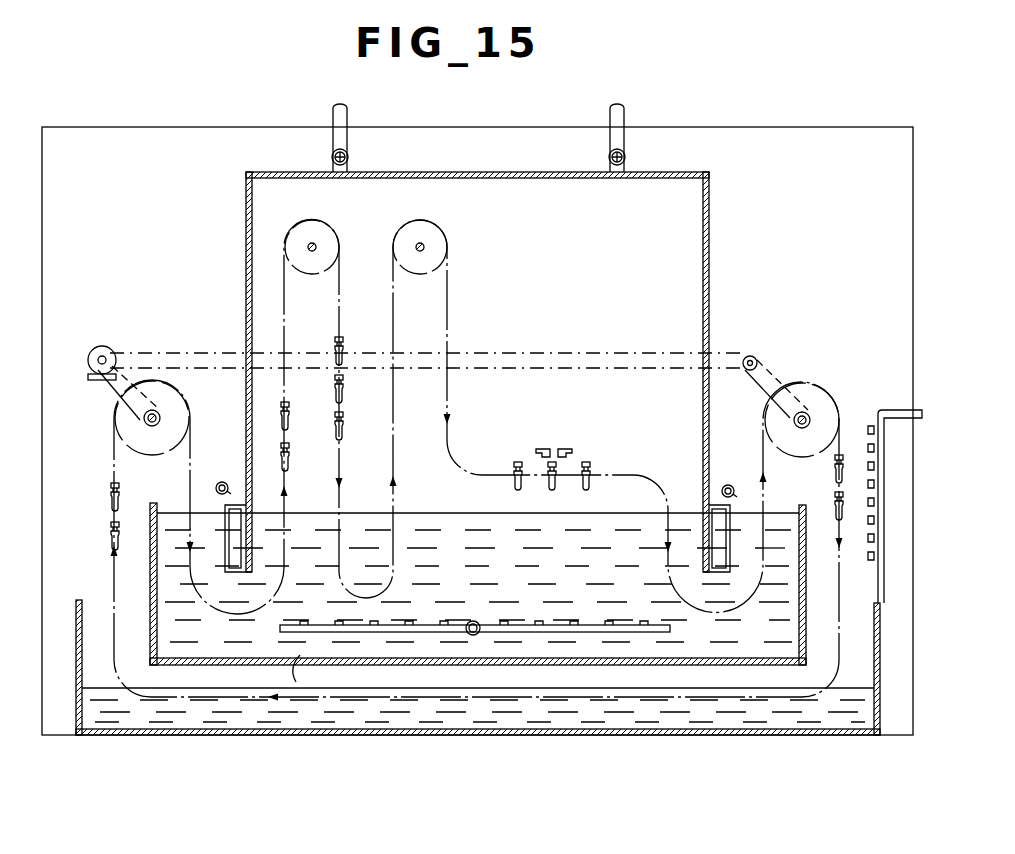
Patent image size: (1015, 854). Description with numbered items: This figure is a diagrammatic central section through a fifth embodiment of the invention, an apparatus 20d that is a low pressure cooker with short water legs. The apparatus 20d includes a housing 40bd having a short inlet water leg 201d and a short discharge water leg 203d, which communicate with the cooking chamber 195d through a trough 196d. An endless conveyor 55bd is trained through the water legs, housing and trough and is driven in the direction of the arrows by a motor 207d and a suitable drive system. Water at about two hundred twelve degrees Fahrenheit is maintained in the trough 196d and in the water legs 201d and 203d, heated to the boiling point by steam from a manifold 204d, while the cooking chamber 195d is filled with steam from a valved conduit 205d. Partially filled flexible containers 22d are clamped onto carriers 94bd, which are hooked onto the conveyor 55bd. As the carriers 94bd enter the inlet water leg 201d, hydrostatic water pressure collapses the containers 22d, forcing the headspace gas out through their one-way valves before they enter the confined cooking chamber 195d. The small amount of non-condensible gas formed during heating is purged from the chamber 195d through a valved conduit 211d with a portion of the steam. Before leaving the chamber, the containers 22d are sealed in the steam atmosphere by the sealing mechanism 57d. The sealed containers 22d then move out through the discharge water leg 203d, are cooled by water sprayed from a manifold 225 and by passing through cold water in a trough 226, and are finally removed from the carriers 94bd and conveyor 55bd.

The apparatus 20d is at (776, 82).
The valved conduit 211d is at (333, 114).
The valved conduit 205d is at (624, 114).
The housing 40bd is at (718, 184).
The cooking chamber 195d is at (572, 259).
The endless conveyor 55bd is at (276, 286).
The motor 207d is at (104, 350).
The discharge water leg 203d is at (770, 540).
The carriers 94bd is at (274, 414).
The flexible containers 22d is at (343, 407).
The nozzle clamp 57d is at (553, 440).
The inlet water leg 201d is at (178, 563).
The trough 196d is at (322, 668).
The manifold 204d is at (595, 632).
The manifold 225 is at (884, 509).
The trough 226 is at (483, 708).